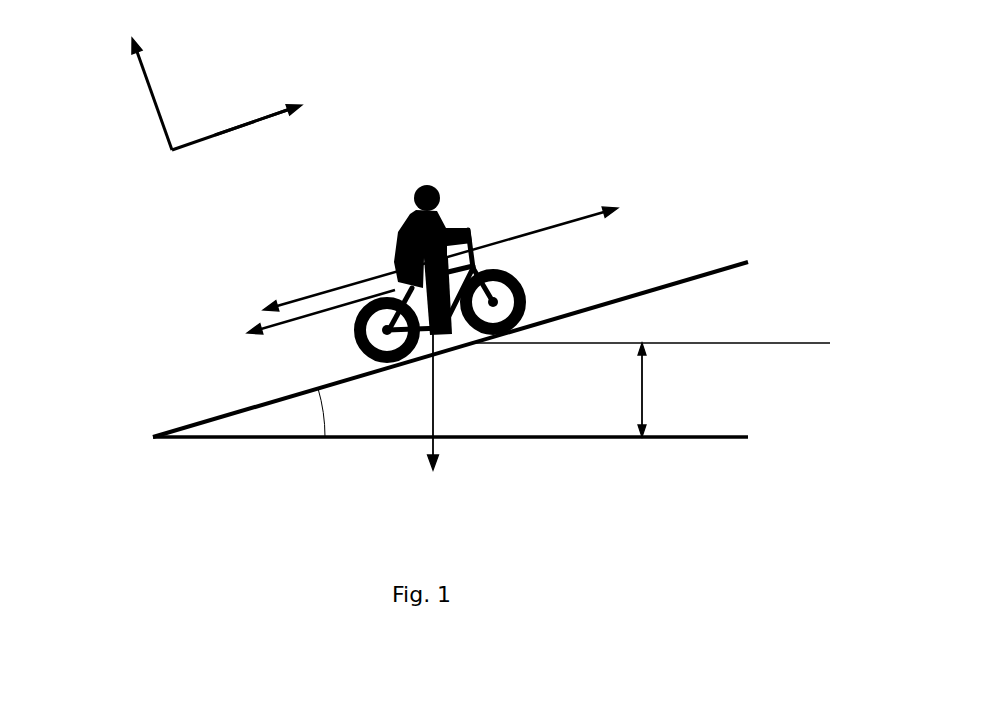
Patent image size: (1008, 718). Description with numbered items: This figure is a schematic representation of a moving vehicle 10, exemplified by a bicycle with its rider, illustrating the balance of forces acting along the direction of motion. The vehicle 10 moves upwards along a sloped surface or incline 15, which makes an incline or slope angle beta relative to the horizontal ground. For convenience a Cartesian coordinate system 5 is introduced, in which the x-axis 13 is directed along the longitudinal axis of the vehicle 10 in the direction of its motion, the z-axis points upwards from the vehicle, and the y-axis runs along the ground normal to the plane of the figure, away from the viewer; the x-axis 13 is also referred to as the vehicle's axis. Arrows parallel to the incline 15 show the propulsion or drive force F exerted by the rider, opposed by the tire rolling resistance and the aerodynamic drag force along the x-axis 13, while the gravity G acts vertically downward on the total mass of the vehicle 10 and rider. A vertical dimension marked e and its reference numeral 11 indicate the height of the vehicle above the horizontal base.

The Cartesian coordinate system 5 is at (113, 133).
The x-axis 13 is at (240, 127).
The vehicle 10 is at (427, 186).
The incline 15 is at (716, 266).
The elevation 11 is at (647, 380).